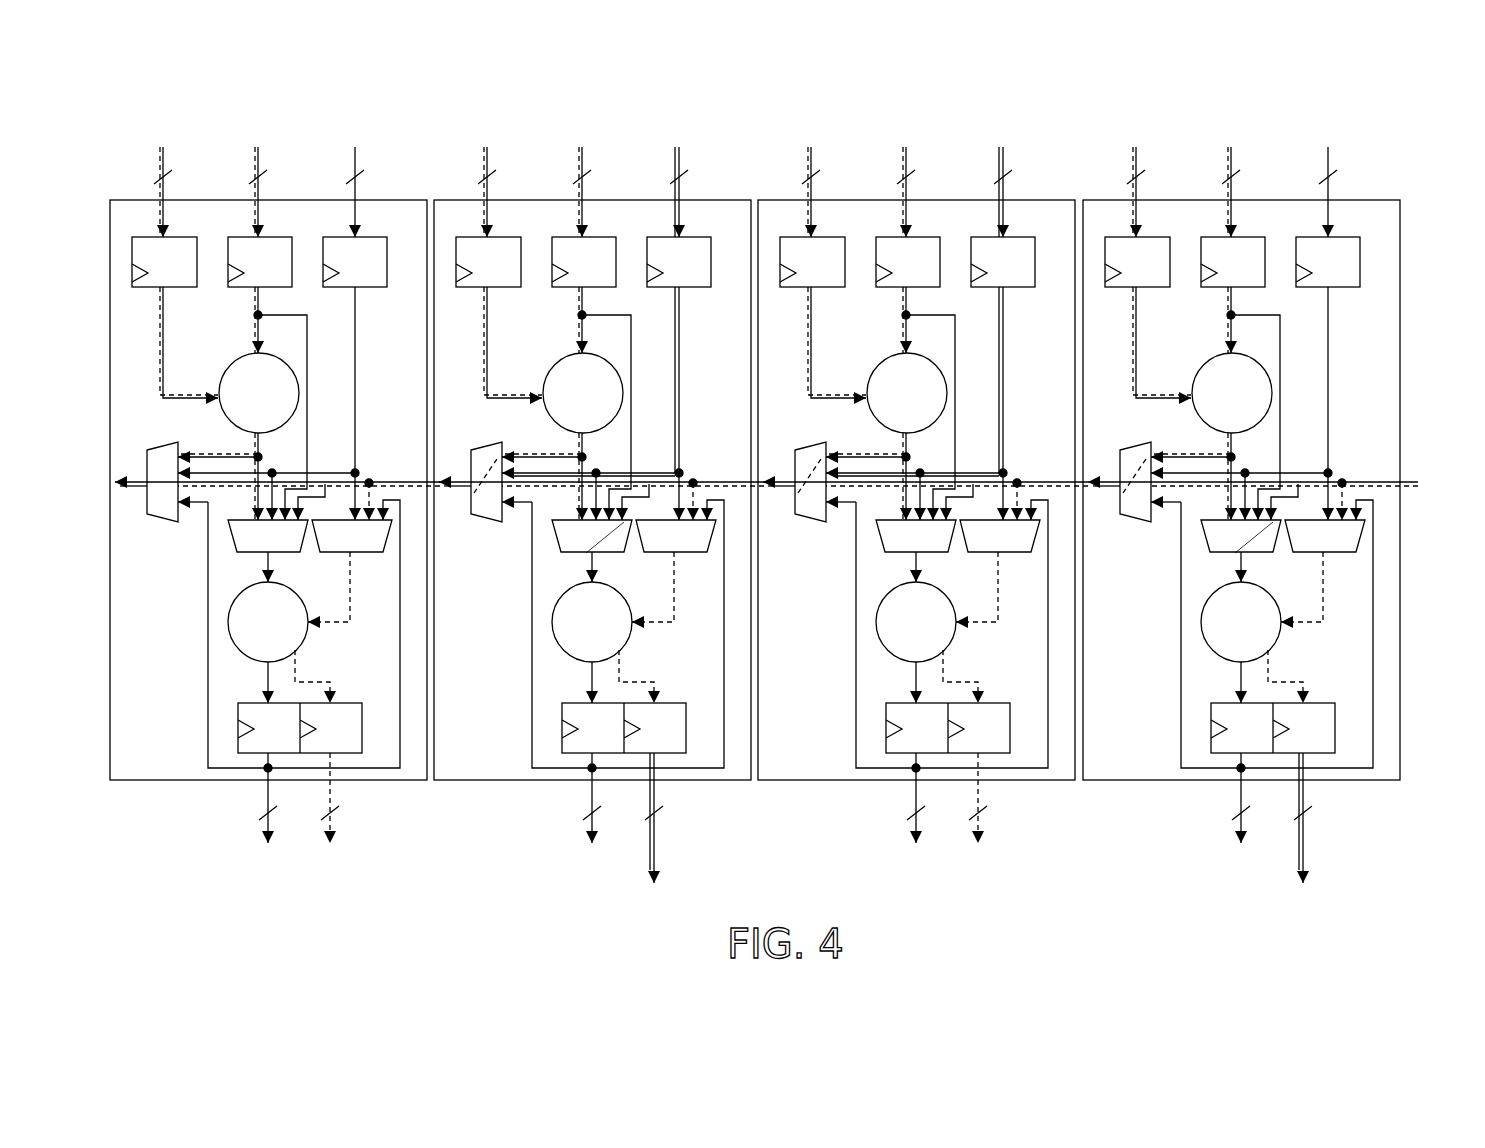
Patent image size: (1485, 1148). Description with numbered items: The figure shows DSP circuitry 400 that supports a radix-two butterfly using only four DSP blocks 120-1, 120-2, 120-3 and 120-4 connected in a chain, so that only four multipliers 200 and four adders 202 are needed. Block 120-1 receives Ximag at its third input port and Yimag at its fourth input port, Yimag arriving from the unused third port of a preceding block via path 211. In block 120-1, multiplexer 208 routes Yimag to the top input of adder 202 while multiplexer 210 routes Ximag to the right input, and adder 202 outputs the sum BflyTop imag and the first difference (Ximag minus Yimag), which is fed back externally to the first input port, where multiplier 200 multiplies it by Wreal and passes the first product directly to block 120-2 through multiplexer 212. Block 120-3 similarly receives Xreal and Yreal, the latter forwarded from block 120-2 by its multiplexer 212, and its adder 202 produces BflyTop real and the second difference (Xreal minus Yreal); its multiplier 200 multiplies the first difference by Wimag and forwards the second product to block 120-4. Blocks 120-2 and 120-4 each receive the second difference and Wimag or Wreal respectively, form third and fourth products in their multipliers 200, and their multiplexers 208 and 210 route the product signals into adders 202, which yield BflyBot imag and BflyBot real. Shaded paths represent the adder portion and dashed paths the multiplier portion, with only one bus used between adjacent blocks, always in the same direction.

The DSP circuitry 400 is at (1374, 98).
The DSP block 120-1 is at (1241, 521).
The DSP block 120-2 is at (916, 521).
The DSP block 120-3 is at (592, 521).
The DSP block 120-4 is at (145, 772).
The multiplier 200 is at (232, 360).
The adder 202 is at (302, 633).
The multiplexer 208 is at (228, 538).
The multiplexer 210 is at (368, 556).
The path 211 is at (1253, 456).
The multiplexer 212 is at (163, 458).